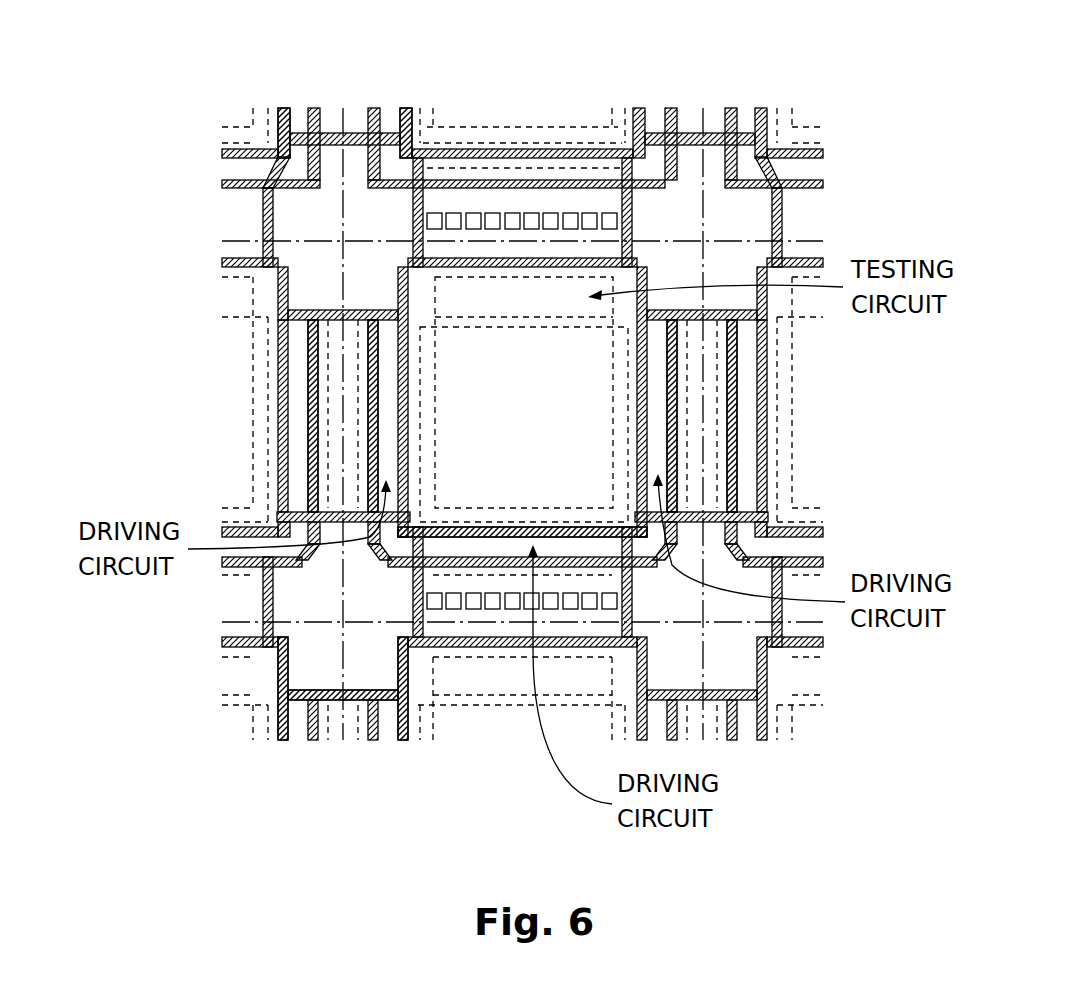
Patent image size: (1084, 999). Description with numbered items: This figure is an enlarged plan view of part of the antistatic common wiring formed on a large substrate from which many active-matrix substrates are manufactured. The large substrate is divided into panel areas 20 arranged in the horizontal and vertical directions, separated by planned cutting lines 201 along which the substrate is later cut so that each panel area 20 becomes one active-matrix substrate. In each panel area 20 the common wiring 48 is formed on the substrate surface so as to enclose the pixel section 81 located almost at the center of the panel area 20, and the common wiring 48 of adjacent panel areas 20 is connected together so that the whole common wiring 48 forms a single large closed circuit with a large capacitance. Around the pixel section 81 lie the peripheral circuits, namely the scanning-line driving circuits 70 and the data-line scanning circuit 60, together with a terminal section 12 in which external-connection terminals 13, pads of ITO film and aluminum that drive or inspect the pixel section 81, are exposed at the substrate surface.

The common wiring 48 is at (405, 104).
The terminal section 12 is at (473, 212).
The external-connection terminals 13 is at (477, 612).
The pixel section 81 is at (455, 352).
The scanning-line driving circuits 70 is at (390, 400).
The data-line scanning circuit 60 is at (584, 547).
The planned cutting lines 201 is at (345, 594).
The panel areas 20 is at (368, 602).